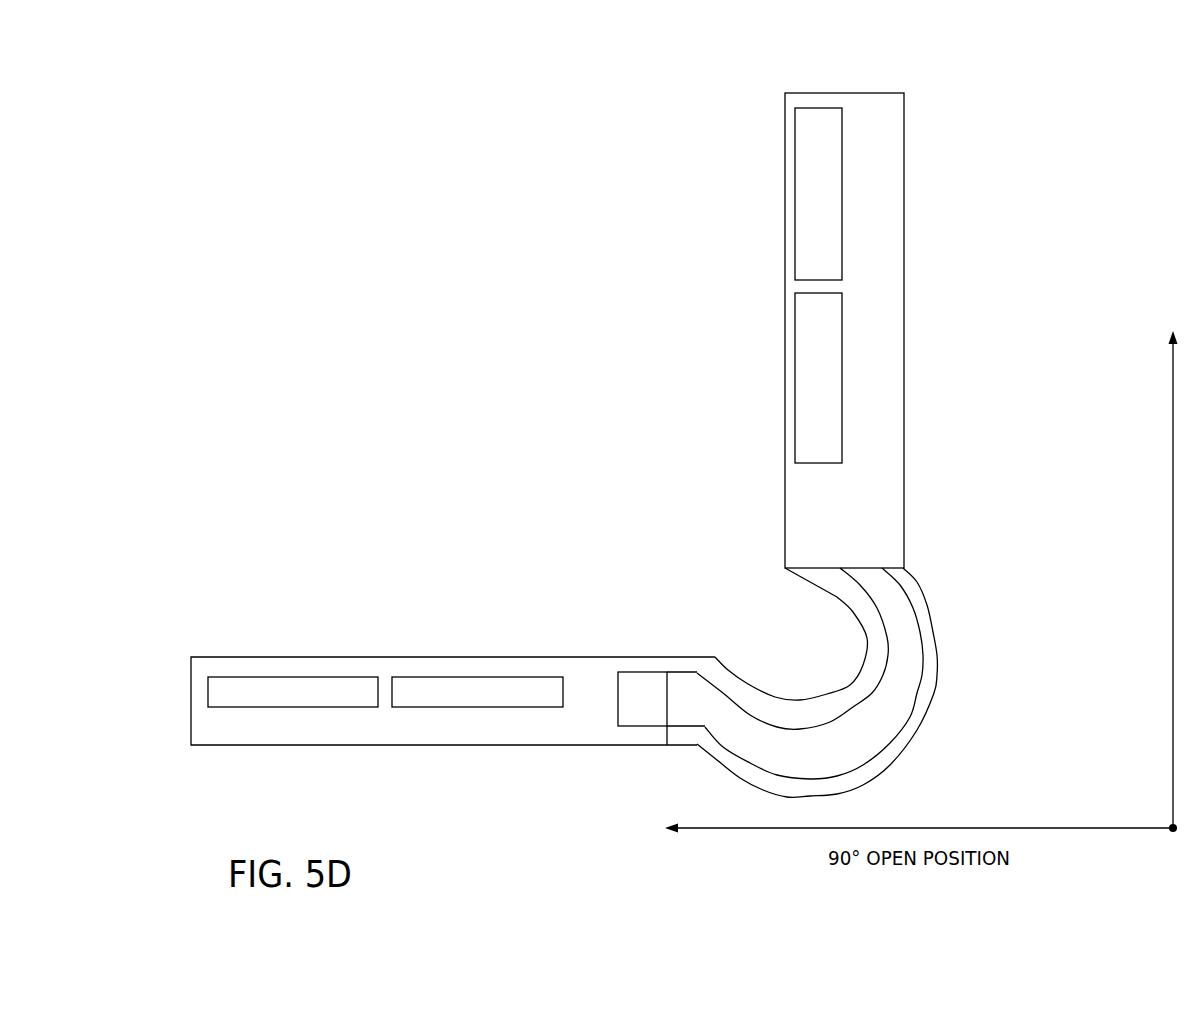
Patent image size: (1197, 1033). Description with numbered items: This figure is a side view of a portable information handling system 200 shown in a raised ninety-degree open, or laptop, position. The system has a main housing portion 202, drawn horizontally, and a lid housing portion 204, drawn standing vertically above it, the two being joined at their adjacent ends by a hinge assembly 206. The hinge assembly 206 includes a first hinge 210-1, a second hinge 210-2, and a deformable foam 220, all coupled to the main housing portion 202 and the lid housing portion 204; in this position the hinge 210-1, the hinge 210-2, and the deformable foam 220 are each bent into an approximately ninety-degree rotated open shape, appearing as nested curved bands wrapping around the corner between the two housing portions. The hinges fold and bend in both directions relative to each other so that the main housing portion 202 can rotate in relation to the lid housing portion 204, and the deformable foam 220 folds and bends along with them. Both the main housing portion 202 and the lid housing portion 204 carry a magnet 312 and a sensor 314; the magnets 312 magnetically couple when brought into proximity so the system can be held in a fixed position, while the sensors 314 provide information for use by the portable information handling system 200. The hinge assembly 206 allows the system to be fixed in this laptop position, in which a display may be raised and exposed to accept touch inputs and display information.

The portable information handling system 200 is at (660, 436).
The main housing portion 202 is at (453, 701).
The lid housing portion 204 is at (844, 330).
The hinge assembly 206 is at (863, 697).
The hinge 210-1 is at (840, 592).
The hinge 210-2 is at (782, 792).
The deformable foam 220 is at (834, 750).
The magnet 312 is at (525, 407).
The sensor 314 is at (617, 500).